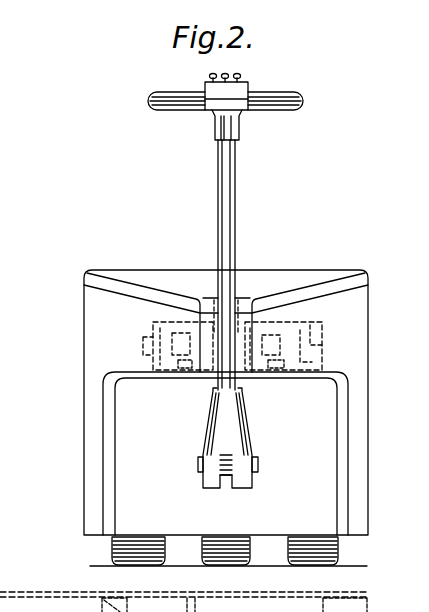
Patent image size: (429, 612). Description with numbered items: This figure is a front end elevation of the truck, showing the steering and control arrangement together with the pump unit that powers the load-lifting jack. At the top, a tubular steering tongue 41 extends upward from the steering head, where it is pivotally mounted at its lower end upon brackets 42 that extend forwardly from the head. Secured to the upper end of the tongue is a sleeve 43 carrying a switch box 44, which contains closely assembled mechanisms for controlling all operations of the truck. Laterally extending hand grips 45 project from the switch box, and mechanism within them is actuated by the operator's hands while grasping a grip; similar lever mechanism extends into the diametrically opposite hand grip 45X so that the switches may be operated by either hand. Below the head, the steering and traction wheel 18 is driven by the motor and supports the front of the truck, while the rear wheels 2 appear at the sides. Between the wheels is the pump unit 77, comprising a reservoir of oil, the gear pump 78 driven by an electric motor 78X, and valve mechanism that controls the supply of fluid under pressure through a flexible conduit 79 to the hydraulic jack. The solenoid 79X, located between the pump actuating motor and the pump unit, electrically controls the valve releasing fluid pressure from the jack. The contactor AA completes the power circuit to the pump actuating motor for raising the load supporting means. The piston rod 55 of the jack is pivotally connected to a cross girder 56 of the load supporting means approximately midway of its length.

The rear wheels 2 is at (112, 553).
The steering and traction wheel 18 is at (252, 546).
The tubular steering tongue 41 is at (233, 230).
The brackets 42 is at (198, 464).
The sleeve 43 is at (218, 126).
The switch box 44 is at (237, 93).
The hand grips 45 is at (275, 111).
The other hand grip 45X is at (177, 111).
The piston rod 55 is at (204, 611).
The cross girder 56 is at (145, 594).
The pump unit 77 is at (323, 333).
The gear pump 78 is at (262, 341).
The electric motor 78X is at (175, 326).
The flexible conduit 79 is at (323, 347).
The solenoid 79X is at (218, 313).
The contactor AA is at (189, 298).